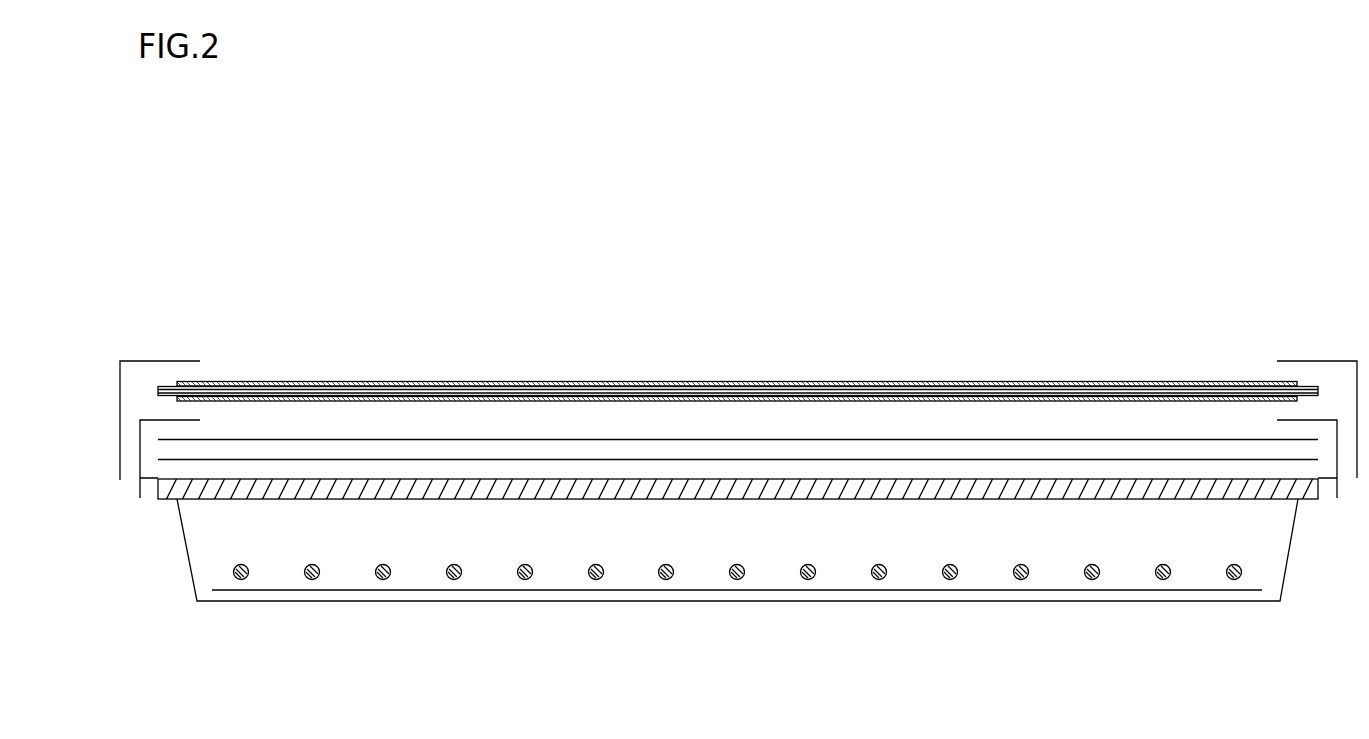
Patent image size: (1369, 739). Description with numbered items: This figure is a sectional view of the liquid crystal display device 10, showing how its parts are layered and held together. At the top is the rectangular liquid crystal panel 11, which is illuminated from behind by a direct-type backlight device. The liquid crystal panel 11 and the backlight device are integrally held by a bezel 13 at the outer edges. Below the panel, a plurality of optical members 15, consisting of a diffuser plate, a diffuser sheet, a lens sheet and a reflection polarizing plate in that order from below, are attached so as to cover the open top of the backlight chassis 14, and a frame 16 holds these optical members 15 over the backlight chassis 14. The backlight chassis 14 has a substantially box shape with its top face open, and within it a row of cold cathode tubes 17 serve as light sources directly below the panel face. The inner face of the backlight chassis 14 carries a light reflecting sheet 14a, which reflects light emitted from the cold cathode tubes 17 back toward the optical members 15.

The liquid crystal display device 10 is at (572, 302).
The liquid crystal panel 11 is at (445, 380).
The bezel 13 is at (165, 361).
The backlight chassis 14 is at (182, 540).
The light reflecting sheet 14a is at (1111, 589).
The optical members 15 is at (768, 459).
The frame 16 is at (150, 420).
The cold cathode tubes 17 is at (383, 564).